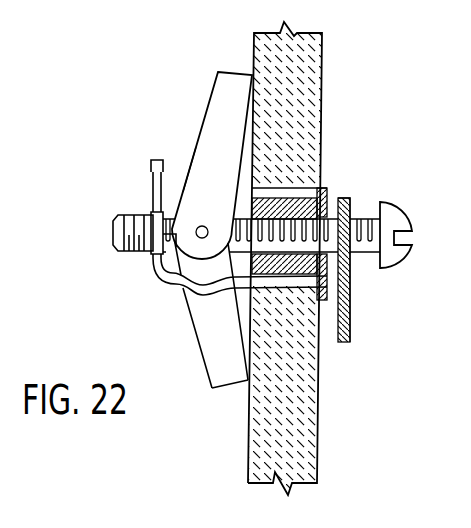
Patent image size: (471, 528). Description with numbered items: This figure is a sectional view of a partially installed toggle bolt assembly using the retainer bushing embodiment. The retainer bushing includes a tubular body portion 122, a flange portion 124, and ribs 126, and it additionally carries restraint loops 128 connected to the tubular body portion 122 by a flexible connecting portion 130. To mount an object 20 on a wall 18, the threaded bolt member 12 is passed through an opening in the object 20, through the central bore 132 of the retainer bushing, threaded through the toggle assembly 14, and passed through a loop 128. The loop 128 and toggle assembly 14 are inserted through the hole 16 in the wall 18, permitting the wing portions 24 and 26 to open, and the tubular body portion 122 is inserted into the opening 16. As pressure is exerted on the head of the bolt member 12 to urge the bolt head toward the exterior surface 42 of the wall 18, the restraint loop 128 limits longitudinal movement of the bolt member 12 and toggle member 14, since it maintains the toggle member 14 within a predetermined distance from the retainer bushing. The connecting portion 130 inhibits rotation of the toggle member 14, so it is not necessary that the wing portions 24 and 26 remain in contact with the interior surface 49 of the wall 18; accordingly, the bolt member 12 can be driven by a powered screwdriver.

The threaded bolt member 12 is at (407, 257).
The toggle assembly 14 is at (204, 320).
The hole 16 is at (237, 177).
The wall 18 is at (313, 88).
The object 20 is at (345, 306).
The wing portion 24 is at (228, 97).
The wing portion 26 is at (210, 348).
The exterior surface 42 is at (318, 426).
The interior surface 49 is at (250, 438).
The tubular body portion 122 is at (325, 187).
The flange portion 124 is at (350, 203).
The ribs 126 is at (264, 196).
The restraint loop 128 is at (152, 216).
The flexible connecting portion 130 is at (151, 170).
The central bore 132 is at (203, 188).